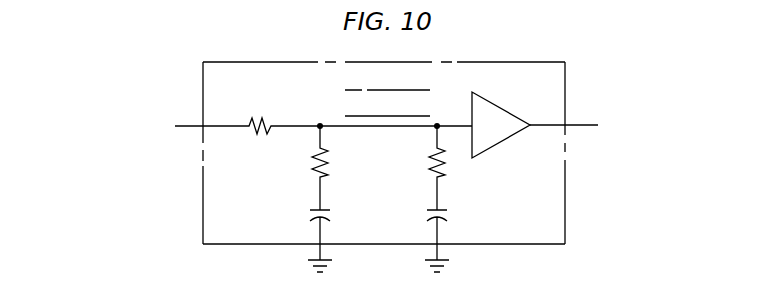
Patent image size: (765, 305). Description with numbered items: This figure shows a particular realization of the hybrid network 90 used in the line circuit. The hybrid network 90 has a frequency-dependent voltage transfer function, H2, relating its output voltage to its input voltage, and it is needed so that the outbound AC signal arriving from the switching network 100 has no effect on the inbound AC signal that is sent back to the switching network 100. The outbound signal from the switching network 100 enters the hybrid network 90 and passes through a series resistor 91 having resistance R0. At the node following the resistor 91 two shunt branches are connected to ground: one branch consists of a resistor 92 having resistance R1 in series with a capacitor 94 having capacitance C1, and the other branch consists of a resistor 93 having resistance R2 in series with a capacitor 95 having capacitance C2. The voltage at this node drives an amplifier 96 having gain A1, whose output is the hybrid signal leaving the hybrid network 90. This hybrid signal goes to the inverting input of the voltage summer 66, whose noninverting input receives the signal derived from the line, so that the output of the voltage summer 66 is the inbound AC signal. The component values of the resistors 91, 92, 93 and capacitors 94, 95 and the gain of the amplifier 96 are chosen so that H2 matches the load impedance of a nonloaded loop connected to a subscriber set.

The hybrid network 90 is at (244, 62).
The resistor 91 is at (263, 112).
The resistor 92 is at (311, 161).
The resistor 93 is at (431, 161).
The capacitor 94 is at (311, 216).
The capacitor 95 is at (431, 216).
The amplifier 96 is at (497, 144).
The switching network 100 is at (119, 129).
The voltage summer 66 is at (643, 124).